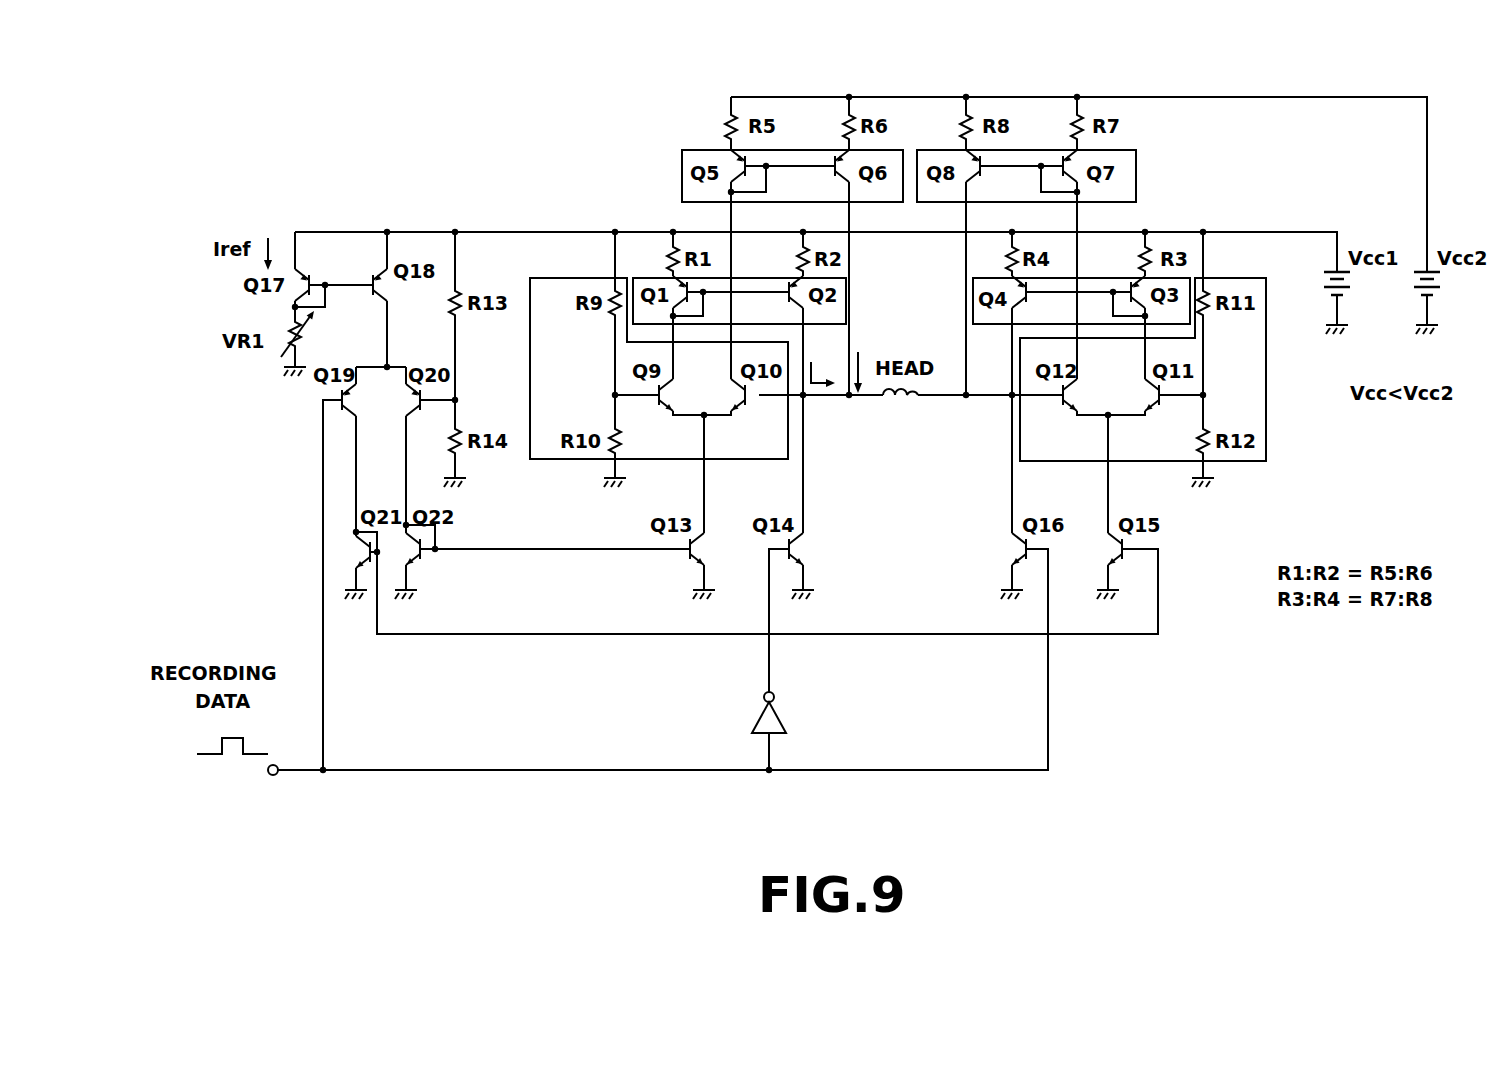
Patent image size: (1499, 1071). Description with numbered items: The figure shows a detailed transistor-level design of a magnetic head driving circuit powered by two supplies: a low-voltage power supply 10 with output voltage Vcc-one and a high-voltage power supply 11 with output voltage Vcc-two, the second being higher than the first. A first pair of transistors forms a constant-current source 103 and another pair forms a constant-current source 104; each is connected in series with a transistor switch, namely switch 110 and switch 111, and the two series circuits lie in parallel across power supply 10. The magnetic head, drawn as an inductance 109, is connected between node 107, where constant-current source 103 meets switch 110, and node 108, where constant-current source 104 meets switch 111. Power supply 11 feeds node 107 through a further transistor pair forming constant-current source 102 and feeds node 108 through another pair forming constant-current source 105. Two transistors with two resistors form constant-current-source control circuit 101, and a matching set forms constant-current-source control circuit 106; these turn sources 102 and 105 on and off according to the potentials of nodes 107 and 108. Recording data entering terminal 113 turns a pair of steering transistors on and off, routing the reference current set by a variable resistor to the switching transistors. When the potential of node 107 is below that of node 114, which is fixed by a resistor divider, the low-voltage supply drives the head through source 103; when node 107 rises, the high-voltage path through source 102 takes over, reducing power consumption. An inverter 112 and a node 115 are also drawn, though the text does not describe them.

The power supply 10 is at (1322, 283).
The power supply 11 is at (1413, 283).
The constant-current-source control circuit 101 is at (570, 277).
The constant-current source 102 is at (698, 149).
The constant-current source 103 is at (645, 277).
The constant-current source 104 is at (973, 279).
The constant-current source 105 is at (1062, 176).
The constant-current-source control circuit 106 is at (1266, 425).
The node 107 is at (805, 398).
The node 108 is at (1010, 397).
The inductance 109 is at (903, 405).
The switch 110 is at (783, 497).
The switch 111 is at (1078, 499).
The inverter 112 is at (778, 712).
The terminal 113 is at (269, 780).
The node 114 is at (615, 395).
The base node of transistor Q11 115 is at (1204, 394).